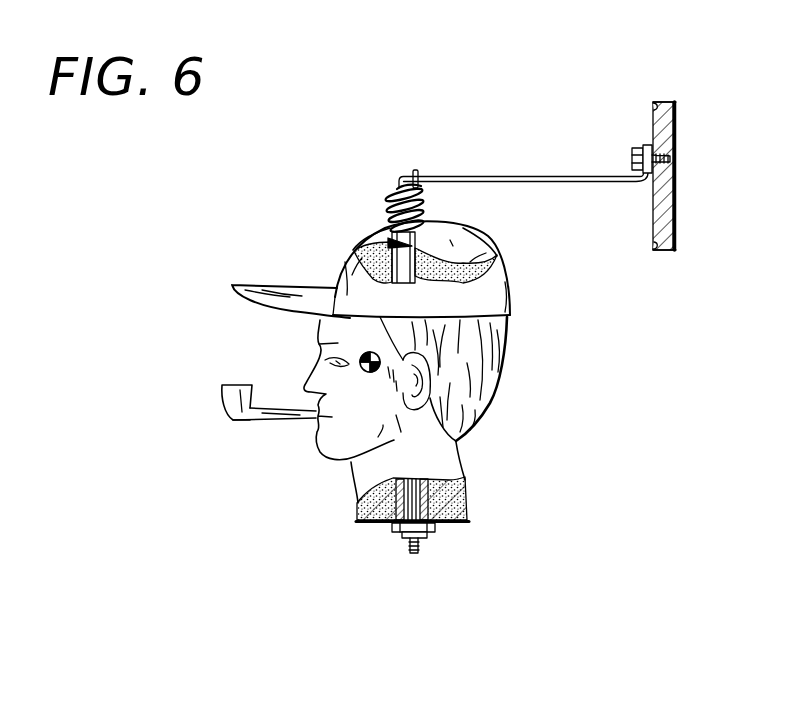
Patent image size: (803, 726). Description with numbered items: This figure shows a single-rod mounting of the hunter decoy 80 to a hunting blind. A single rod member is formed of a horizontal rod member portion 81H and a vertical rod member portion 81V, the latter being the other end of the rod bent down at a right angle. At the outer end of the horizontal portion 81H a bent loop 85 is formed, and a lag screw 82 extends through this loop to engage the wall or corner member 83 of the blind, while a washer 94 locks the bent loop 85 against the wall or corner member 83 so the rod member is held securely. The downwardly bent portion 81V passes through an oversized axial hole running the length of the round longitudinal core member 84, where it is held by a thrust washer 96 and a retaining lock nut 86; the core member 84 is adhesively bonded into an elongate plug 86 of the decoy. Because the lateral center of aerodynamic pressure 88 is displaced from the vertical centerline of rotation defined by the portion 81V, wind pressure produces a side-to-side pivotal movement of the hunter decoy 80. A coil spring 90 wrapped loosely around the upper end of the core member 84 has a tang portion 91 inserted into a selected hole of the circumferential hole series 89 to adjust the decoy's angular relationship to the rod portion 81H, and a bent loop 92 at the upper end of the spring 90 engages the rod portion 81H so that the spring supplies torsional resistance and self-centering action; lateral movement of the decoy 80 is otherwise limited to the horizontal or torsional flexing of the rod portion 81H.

The hunter decoy 80 is at (183, 279).
The rod member portion 81H is at (482, 175).
The rod member portion 81V is at (407, 550).
The lag screw 82 is at (630, 153).
The wall or corner member 83 is at (677, 203).
The longitudinal core member 84 is at (483, 252).
The bent loop 85 is at (648, 145).
The retaining lock nut / elongate plug 86 is at (503, 357).
The lateral center of aerodynamic pressure 88 is at (360, 371).
The circumferential hole series 89 is at (367, 243).
The coil spring 90 is at (385, 208).
The tang portion 91 is at (437, 232).
The bent loop 92 is at (415, 171).
The washer 94 is at (643, 146).
The thrust washer 96 is at (436, 530).